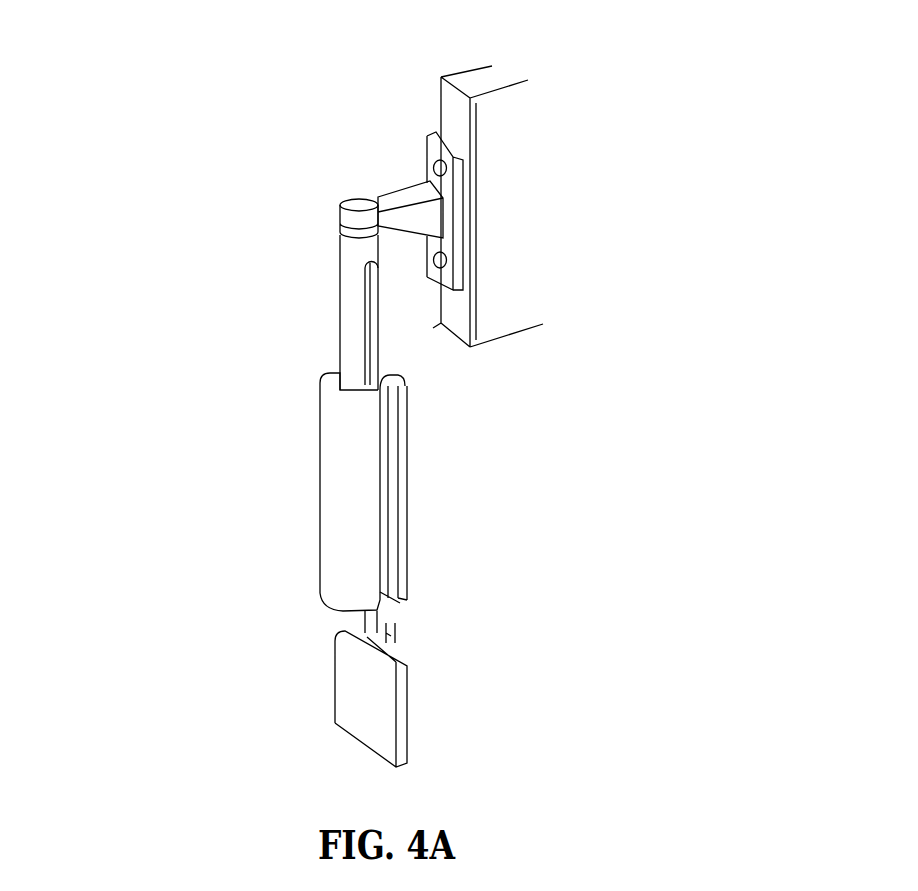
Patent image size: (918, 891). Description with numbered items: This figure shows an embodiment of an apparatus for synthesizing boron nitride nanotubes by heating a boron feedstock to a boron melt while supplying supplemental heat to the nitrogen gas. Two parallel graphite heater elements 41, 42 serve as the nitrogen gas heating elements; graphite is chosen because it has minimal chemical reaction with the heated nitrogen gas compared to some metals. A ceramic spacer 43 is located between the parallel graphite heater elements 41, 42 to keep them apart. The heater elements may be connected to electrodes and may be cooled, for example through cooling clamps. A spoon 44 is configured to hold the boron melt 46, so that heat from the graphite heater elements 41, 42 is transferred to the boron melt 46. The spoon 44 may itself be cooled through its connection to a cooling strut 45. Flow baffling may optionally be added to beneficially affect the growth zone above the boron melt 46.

The graphite heater element 41 is at (318, 392).
The graphite heater element 42 is at (412, 573).
The ceramic spacer 43 is at (360, 698).
The spoon 44 is at (387, 194).
The cooling strut 45 is at (524, 142).
The boron melt 46 is at (343, 214).